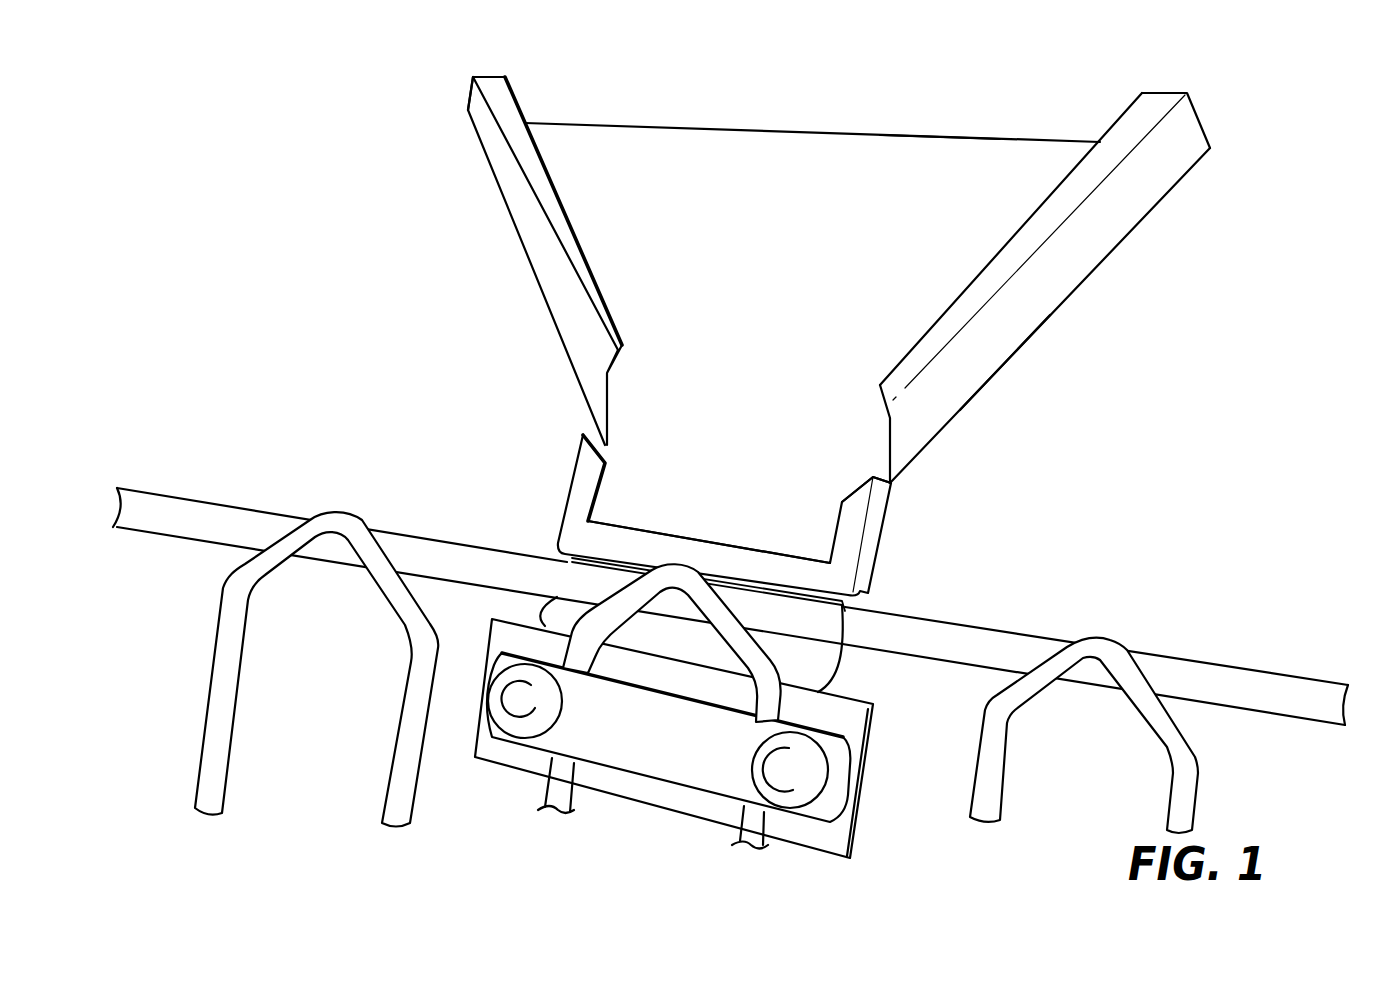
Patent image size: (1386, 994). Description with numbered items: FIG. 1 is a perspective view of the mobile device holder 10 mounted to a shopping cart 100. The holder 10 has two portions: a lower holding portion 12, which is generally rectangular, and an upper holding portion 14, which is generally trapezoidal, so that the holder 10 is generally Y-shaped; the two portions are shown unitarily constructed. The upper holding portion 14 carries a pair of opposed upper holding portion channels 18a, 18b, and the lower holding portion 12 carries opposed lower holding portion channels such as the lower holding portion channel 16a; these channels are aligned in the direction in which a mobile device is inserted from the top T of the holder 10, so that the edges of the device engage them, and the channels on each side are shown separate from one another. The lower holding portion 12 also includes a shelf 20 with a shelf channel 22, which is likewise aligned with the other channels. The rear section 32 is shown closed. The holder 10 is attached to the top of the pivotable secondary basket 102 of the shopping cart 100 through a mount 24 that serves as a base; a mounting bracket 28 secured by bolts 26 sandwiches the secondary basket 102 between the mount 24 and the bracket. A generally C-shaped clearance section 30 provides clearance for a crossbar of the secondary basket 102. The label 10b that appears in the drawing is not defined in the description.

The mobile device holder 10 is at (414, 229).
The channel base 10b is at (873, 530).
The lower holding portion 12 is at (893, 496).
The upper holding portion 14 is at (977, 366).
The lower holding portion channel 16a is at (583, 455).
The upper holding portion channel 18a is at (540, 257).
The upper holding portion channel 18b is at (1045, 282).
The shelf 20 is at (886, 610).
The shelf channel 22 is at (615, 542).
The mount 24 is at (858, 712).
The bolts 26 is at (522, 735).
The mounting bracket 28 is at (633, 763).
The clearance section 30 is at (826, 658).
The rear section 32 is at (912, 157).
The top of the holder T is at (803, 124).
The shopping cart 100 is at (228, 476).
The secondary basket 102 is at (1028, 648).